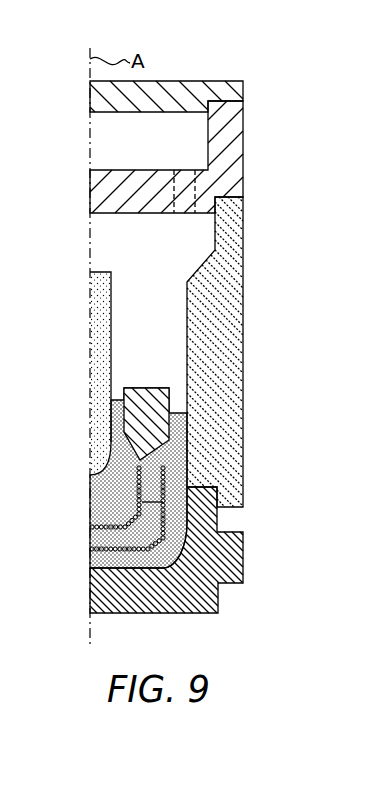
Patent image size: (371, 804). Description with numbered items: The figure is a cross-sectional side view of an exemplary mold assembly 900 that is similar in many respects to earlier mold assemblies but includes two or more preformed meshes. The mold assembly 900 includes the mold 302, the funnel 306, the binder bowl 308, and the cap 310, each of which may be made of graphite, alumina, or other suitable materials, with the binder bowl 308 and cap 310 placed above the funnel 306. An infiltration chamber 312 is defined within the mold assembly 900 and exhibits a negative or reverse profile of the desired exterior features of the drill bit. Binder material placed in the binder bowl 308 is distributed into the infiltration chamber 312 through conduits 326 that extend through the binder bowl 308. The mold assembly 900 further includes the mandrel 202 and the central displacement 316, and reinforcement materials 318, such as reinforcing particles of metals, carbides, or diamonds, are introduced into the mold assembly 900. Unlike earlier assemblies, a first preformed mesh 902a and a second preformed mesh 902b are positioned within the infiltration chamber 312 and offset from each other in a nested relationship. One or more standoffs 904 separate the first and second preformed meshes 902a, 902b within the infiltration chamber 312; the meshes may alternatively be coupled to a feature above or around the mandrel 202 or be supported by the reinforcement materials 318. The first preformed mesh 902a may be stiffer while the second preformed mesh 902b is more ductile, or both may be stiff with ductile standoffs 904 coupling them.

The mold assembly 900 is at (272, 105).
The cap 310 is at (165, 80).
The binder bowl 308 is at (243, 143).
The conduits 326 is at (175, 186).
The infiltration chamber 312 is at (162, 251).
The central displacement 316 is at (107, 300).
The funnel 306 is at (243, 347).
The mandrel 202 is at (161, 434).
The reinforcement materials 318 is at (103, 495).
The standoffs 904 is at (168, 487).
The first preformed mesh 902a is at (160, 556).
The second preformed mesh 902b is at (86, 527).
The mold 302 is at (243, 556).